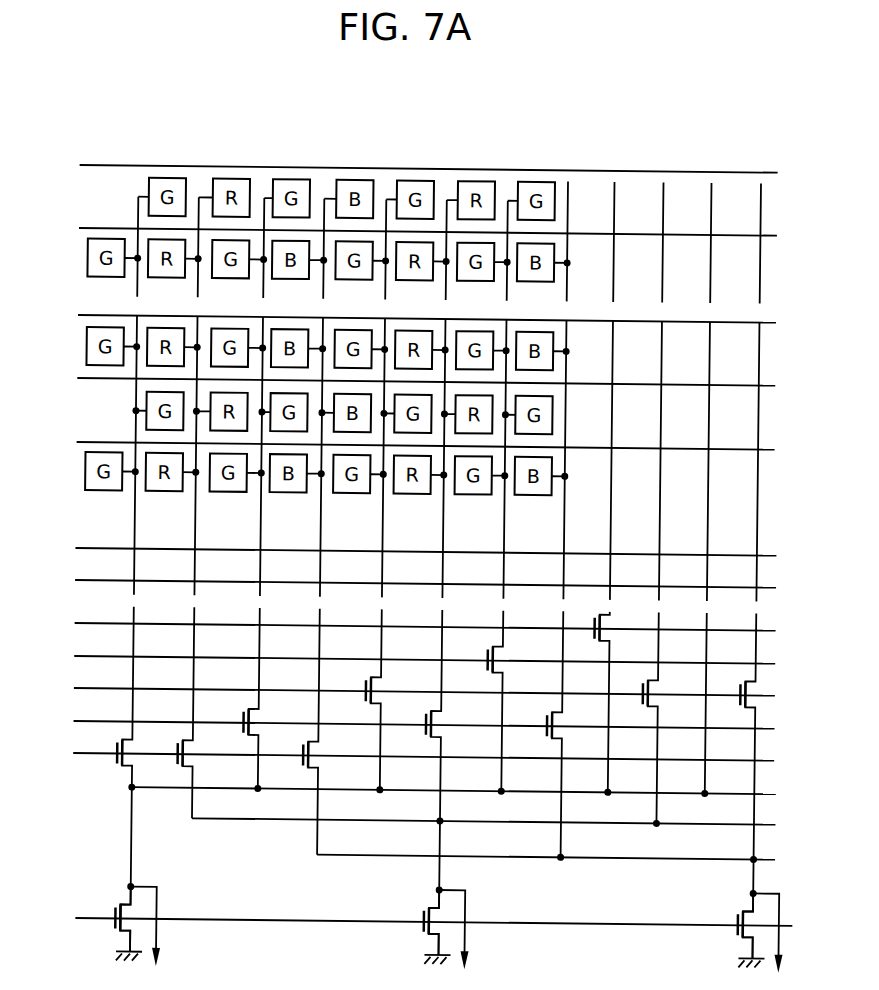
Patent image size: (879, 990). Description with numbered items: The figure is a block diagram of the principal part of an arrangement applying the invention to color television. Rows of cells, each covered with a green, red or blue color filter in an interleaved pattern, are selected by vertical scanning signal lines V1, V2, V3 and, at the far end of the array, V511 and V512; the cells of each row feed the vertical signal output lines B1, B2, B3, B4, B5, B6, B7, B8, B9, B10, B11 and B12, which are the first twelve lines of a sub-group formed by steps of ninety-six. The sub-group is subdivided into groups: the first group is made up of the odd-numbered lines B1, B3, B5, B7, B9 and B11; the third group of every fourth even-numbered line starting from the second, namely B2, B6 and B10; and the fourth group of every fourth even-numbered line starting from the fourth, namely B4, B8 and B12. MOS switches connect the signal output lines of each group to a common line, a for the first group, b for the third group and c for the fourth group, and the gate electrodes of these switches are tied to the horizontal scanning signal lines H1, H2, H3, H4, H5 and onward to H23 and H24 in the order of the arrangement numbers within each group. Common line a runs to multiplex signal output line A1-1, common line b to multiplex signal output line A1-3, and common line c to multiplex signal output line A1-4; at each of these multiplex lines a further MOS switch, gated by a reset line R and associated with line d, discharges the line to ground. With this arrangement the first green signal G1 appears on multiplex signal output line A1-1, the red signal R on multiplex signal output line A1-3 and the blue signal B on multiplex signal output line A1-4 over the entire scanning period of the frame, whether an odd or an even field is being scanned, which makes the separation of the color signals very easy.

The vertical scanning signal line V512 is at (404, 168).
The vertical scanning signal line V511 is at (403, 231).
The vertical scanning signal line V3 is at (408, 319).
The vertical scanning signal line V2 is at (407, 382).
The vertical scanning signal line V1 is at (406, 446).
The horizontal scanning signal line H24 is at (401, 551).
The horizontal scanning signal line H23 is at (401, 583).
The horizontal scanning signal line H5 is at (405, 627).
The horizontal scanning signal line H4 is at (405, 660).
The horizontal scanning signal line H3 is at (405, 692).
The horizontal scanning signal line H2 is at (404, 725).
The horizontal scanning signal line H1 is at (404, 757).
The signal output line B1 is at (127, 578).
The signal output line B2 is at (182, 507).
The signal output line B3 is at (250, 495).
The signal output line B4 is at (307, 526).
The signal output line B5 is at (372, 496).
The signal output line B6 is at (435, 582).
The signal output line B7 is at (493, 497).
The signal output line B8 is at (553, 521).
The signal output line B9 is at (600, 489).
The signal output line B10 is at (648, 504).
The signal output line B11 is at (697, 490).
The signal output line B12 is at (749, 575).
The common output line a is at (461, 790).
The common output line b is at (491, 821).
The common output line c is at (552, 857).
The reset control line d is at (801, 926).
The red signal R is at (423, 938).
The first green signal G1 is at (162, 927).
The blue signal B is at (776, 933).
The multiplex signal output line A1-1 is at (133, 887).
The multiplex signal output line A1-3 is at (441, 888).
The multiplex signal output line A1-4 is at (755, 889).